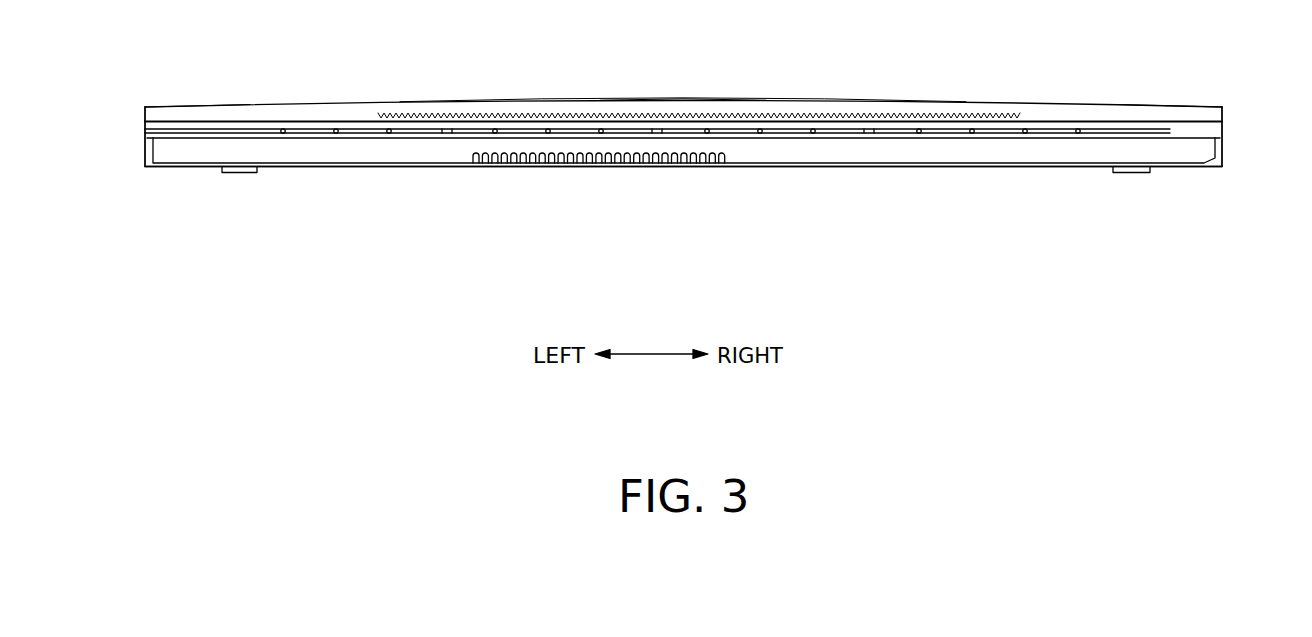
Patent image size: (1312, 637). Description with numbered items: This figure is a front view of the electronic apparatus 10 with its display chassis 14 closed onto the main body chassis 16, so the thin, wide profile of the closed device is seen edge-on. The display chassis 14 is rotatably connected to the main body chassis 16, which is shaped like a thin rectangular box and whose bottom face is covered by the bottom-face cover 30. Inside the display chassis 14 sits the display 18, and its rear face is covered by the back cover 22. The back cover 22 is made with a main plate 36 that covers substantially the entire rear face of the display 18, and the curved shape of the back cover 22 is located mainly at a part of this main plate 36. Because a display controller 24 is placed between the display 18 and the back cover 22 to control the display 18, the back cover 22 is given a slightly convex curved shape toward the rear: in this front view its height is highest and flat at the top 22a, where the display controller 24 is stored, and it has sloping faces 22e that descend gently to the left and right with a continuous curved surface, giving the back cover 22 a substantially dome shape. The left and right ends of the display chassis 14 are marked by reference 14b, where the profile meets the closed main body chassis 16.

The electronic apparatus 10 is at (1278, 75).
The display chassis 14 is at (746, 110).
The housing end portion 14b is at (145, 111).
The main body chassis 16 is at (758, 155).
The display 18 is at (1060, 121).
The back cover 22 is at (518, 101).
The top 22a is at (668, 102).
The sloping faces 22e is at (250, 105).
The display controller 24 is at (927, 113).
The bottom-face cover 30 is at (865, 167).
The main plate 36 is at (683, 100).